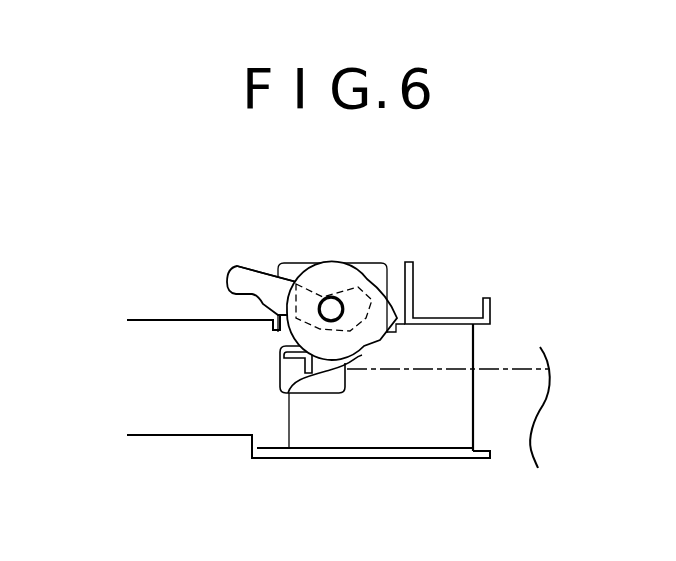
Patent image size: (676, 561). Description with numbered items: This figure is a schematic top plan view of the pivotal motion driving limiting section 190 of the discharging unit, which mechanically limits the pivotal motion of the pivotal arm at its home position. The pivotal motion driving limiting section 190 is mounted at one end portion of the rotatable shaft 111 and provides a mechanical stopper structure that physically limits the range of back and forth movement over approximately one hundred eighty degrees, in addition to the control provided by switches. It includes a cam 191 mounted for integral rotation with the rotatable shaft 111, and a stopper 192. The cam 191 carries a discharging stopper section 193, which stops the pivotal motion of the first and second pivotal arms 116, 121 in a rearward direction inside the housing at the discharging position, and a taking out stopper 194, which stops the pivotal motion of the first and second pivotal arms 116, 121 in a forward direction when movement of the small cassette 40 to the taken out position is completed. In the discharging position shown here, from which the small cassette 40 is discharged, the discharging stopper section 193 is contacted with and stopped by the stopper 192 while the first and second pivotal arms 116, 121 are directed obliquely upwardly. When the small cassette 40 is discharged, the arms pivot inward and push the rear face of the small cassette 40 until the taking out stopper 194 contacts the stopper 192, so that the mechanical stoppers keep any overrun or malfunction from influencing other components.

The small cassette 40 is at (523, 390).
The rotatable shaft 111 is at (330, 296).
The first pivotal arm 116 is at (251, 266).
The second pivotal arm 121 is at (290, 226).
The pivotal motion driving limiting section 190 is at (295, 300).
The cam 191 is at (381, 344).
The stopper 192 is at (346, 369).
The discharging stopper section 193 is at (331, 350).
The taking out stopper 194 is at (381, 284).